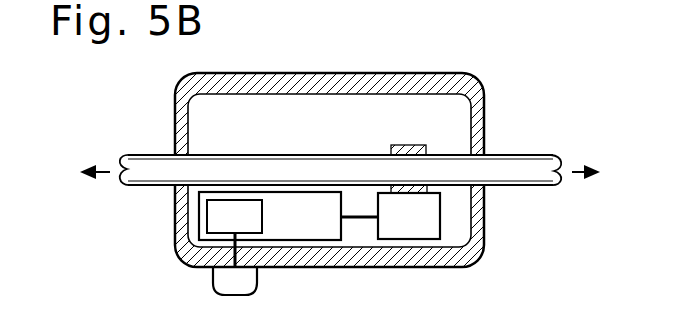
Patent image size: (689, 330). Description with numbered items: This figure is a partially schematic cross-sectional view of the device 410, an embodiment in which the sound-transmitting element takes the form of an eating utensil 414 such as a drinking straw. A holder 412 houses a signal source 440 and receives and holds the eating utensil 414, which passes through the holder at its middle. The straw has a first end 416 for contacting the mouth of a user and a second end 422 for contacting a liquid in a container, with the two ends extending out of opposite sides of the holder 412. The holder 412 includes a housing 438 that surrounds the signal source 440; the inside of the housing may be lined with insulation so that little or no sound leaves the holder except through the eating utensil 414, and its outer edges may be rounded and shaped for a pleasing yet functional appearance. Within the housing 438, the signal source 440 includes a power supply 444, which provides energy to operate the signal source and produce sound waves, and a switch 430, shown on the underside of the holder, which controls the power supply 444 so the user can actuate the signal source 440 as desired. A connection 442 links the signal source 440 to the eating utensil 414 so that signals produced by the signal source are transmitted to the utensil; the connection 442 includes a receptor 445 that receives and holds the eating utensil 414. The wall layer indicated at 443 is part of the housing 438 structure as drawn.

The device 410 is at (547, 53).
The holder 412 is at (426, 58).
The eating utensil 414 is at (288, 153).
The first end 416 is at (610, 172).
The second end 422 is at (70, 172).
The switch 430 is at (258, 280).
The housing 438 is at (252, 73).
The signal source 440 is at (288, 231).
The connection 442 is at (390, 228).
The housing wall 443 is at (323, 73).
The power supply 444 is at (215, 228).
The receptor 445 is at (397, 145).